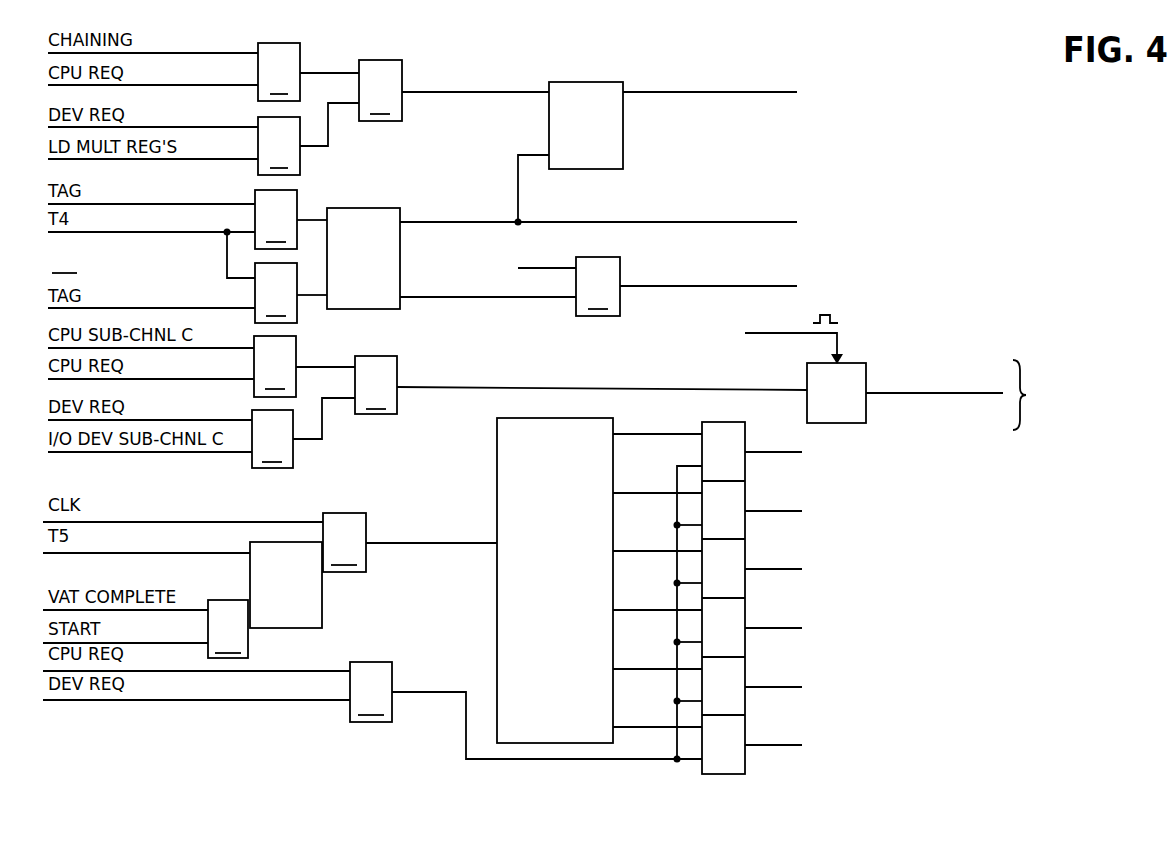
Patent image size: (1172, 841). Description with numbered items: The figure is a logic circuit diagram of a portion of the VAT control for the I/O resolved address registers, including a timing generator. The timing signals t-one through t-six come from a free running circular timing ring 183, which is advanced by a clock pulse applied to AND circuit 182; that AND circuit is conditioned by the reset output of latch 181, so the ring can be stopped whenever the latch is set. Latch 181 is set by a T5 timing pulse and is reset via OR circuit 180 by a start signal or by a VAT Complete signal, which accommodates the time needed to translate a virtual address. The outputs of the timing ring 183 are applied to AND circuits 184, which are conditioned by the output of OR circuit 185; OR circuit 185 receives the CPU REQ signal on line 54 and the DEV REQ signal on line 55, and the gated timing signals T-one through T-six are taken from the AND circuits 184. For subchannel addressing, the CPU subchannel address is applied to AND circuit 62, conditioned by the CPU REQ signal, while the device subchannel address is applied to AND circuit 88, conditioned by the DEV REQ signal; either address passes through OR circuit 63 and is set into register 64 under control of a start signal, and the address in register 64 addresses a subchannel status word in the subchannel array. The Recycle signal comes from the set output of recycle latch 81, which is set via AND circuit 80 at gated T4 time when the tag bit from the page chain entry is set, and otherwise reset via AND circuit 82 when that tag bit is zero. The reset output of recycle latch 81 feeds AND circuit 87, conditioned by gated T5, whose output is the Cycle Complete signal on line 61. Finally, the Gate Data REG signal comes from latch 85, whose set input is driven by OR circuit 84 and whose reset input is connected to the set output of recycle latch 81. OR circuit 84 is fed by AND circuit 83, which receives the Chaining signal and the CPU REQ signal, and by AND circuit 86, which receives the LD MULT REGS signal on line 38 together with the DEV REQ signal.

The line 54 is at (177, 85).
The line 55 is at (203, 126).
The line 38 is at (190, 160).
The AND circuit 83 is at (308, 72).
The AND circuit 86 is at (308, 139).
The OR circuit 84 is at (454, 90).
The latch 85 is at (590, 172).
The AND circuit 80 is at (291, 219).
The AND circuit 82 is at (291, 293).
The recycle latch 81 is at (336, 312).
The AND circuit 87 is at (569, 281).
The line 61 is at (690, 290).
The AND circuit 62 is at (304, 366).
The AND circuit 88 is at (303, 433).
The OR circuit 63 is at (581, 385).
The register 64 is at (934, 392).
The AND circuit 182 is at (410, 542).
The latch 181 is at (286, 630).
The OR circuit 180 is at (228, 629).
The OR circuit 185 is at (526, 710).
The circular timing ring 183 is at (568, 717).
The AND circuits 184 is at (775, 770).